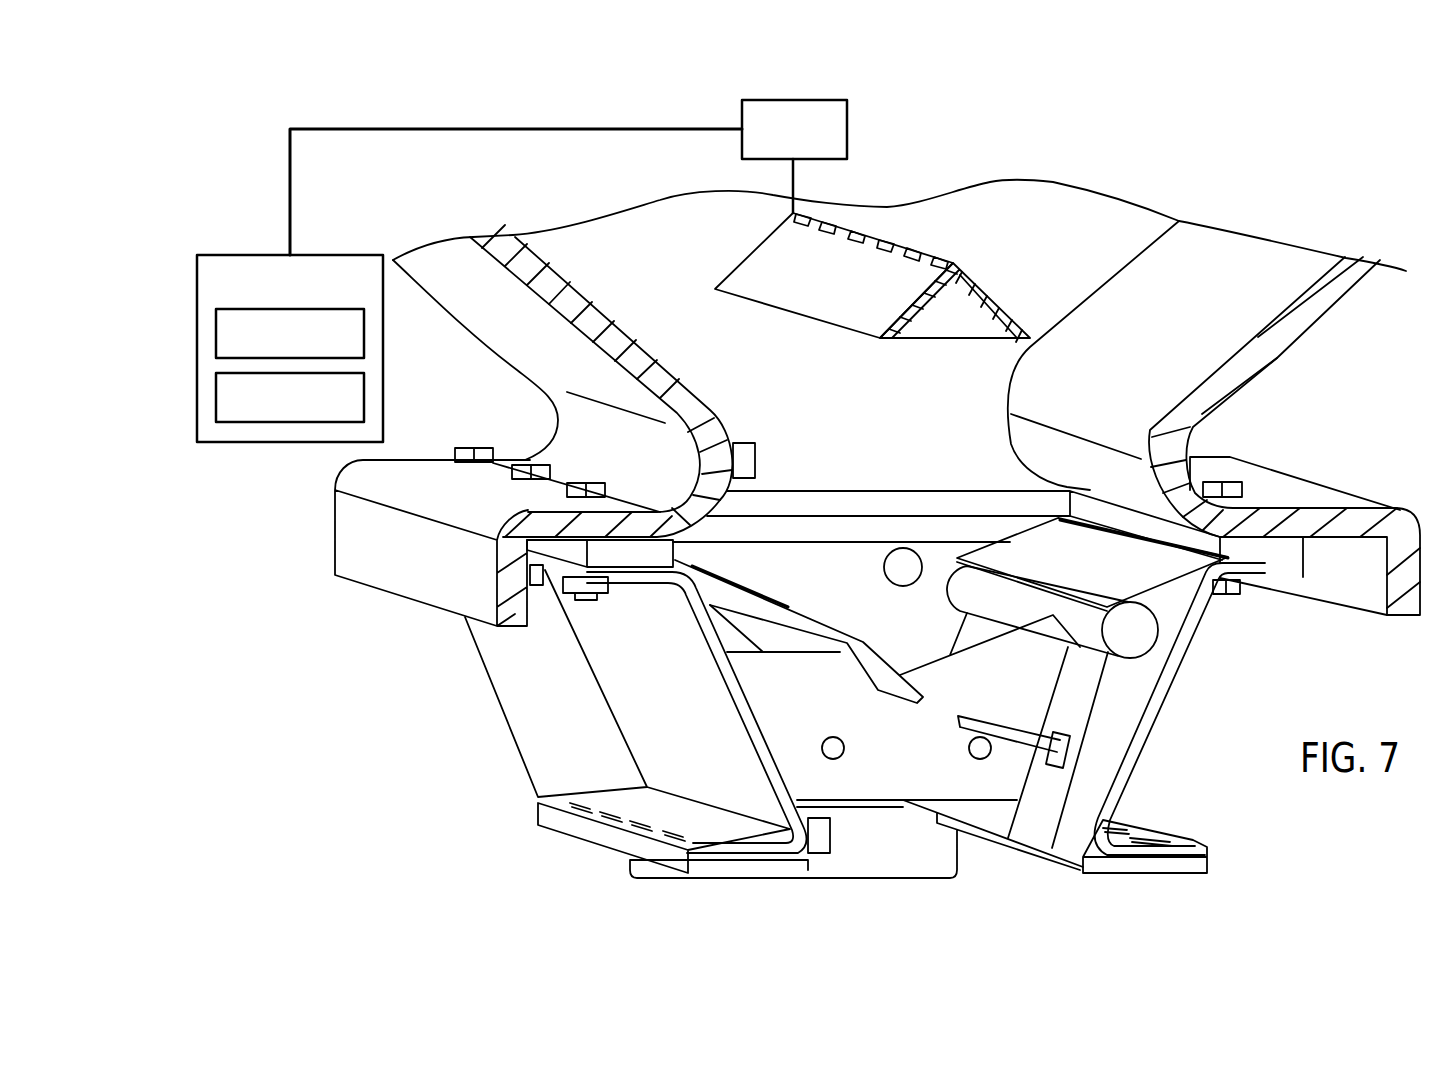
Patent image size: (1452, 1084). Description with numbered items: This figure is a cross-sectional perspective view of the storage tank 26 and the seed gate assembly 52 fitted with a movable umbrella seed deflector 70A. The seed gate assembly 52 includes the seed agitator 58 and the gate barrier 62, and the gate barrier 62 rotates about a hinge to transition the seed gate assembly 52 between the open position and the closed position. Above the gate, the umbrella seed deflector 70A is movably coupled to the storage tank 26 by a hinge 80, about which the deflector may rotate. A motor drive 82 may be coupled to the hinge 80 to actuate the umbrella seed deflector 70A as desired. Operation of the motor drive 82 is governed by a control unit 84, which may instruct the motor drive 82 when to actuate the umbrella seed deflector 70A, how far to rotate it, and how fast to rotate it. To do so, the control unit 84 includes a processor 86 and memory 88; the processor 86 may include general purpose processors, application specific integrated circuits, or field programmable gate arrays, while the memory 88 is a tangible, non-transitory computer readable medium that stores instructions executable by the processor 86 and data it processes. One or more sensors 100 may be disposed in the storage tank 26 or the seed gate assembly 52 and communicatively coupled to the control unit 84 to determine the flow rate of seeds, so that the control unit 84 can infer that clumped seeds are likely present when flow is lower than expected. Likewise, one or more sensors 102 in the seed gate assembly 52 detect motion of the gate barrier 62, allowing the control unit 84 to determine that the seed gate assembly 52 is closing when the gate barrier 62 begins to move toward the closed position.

The storage tank 26 is at (462, 280).
The seed gate assembly 52 is at (1160, 680).
The seed agitator 58 is at (1012, 740).
The gate barrier 62 is at (1050, 800).
The umbrella seed deflector 70A is at (750, 254).
The hinge 80 is at (905, 245).
The motor drive 82 is at (847, 128).
The control unit 84 is at (244, 255).
The processor 86 is at (364, 333).
The memory 88 is at (364, 397).
The sensors 100 is at (756, 456).
The sensors 102 is at (830, 833).